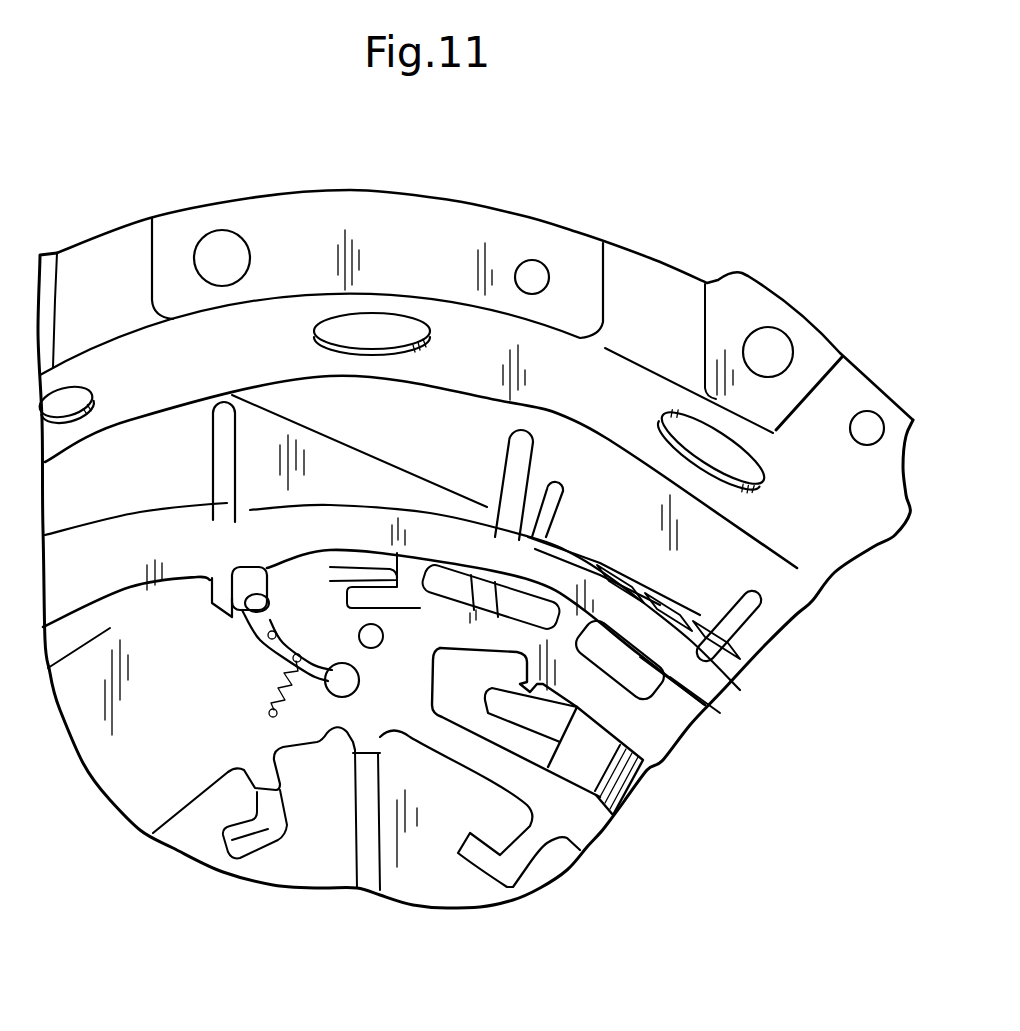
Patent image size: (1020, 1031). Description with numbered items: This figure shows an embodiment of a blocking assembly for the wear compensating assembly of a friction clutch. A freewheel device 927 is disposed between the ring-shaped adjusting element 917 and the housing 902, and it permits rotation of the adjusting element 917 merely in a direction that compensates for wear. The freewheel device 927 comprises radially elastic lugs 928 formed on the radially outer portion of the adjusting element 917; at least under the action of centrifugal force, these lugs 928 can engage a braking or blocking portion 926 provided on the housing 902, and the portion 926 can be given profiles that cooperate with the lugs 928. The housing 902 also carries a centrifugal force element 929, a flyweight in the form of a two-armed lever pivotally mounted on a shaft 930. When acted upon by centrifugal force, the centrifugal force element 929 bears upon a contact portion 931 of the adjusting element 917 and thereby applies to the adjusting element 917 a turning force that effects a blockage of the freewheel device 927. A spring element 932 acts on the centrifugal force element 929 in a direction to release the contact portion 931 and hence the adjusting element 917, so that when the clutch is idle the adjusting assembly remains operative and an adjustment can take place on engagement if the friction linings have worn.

The housing 902 is at (653, 300).
The ring-shaped adjusting element 917 is at (703, 682).
The braking or blocking portion 926 is at (587, 543).
The freewheel device 927 is at (703, 590).
The radially elastic lugs 928 is at (677, 622).
The centrifugal force element 929 is at (315, 667).
The shaft 930 is at (262, 642).
The contact portion 931 is at (218, 590).
The spring element 932 is at (284, 718).